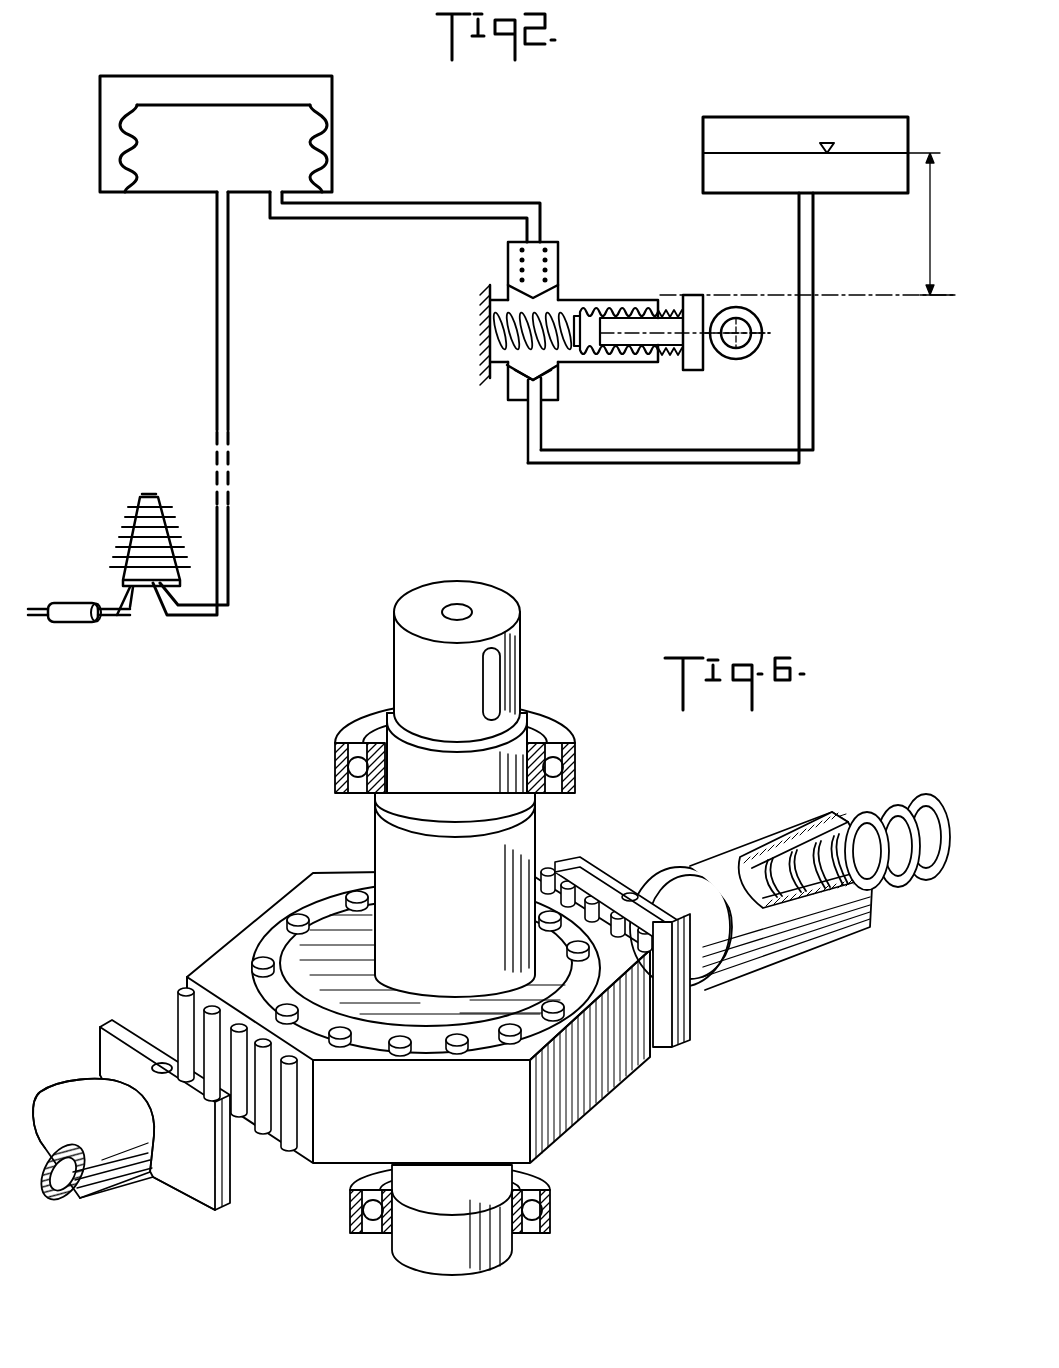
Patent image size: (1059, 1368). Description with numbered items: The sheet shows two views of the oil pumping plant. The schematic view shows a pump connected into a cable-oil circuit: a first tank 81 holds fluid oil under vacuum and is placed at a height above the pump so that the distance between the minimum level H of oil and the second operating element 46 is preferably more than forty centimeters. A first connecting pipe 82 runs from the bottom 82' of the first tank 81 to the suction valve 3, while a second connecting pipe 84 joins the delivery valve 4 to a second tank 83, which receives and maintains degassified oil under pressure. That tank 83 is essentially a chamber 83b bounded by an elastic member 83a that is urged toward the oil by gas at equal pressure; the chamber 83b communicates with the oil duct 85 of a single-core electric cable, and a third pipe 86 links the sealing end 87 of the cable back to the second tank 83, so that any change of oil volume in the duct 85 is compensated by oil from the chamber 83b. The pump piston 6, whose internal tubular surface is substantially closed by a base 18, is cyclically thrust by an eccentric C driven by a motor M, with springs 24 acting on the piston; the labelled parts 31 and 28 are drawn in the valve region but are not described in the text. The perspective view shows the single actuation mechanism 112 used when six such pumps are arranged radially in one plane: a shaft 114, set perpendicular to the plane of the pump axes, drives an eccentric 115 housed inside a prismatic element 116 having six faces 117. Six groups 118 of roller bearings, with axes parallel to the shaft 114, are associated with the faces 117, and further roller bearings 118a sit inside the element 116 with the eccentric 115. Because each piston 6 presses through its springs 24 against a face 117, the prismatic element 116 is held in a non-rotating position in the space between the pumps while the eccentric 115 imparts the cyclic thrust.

In FIG. 2, the second tank 83 is at (122, 197).
In FIG. 2, the elastic member 83a is at (318, 120).
In FIG. 2, the chamber 83b is at (262, 104).
In FIG. 2, the second connecting pipe 84 is at (465, 203).
In FIG. 2, the third pipe 86 is at (228, 410).
In FIG. 2, the sealing end 87 is at (130, 568).
In FIG. 2, the oil duct 85 is at (123, 617).
In FIG. 2, the suction valve 3 is at (512, 393).
In FIG. 2, the valve seat 31 is at (520, 372).
In FIG. 2, the delivery valve 4 is at (508, 258).
In FIG. 2, the second operating element 46 is at (540, 292).
In FIG. 2, the spring 28 is at (563, 350).
In FIG. 2, the piston 6 is at (625, 318).
In FIG. 6, the piston 6 is at (665, 885).
In FIG. 2, the springs 24 is at (676, 358).
In FIG. 6, the springs 24 is at (880, 810).
In FIG. 2, the motor M is at (737, 326).
In FIG. 2, the eccentric C is at (737, 358).
In FIG. 2, the first tank 81 is at (900, 117).
In FIG. 2, the first connecting pipe 82 is at (741, 328).
In FIG. 2, the bottom of the first tank 82' is at (873, 215).
In FIG. 2, the minimum level H is at (931, 224).
In FIG. 6, the actuation mechanism 112 is at (559, 658).
In FIG. 6, the shaft 114 is at (525, 832).
In FIG. 6, the eccentric 115 is at (345, 918).
In FIG. 6, the prismatic element 116 is at (598, 990).
In FIG. 6, the faces 117 is at (590, 1100).
In FIG. 6, the groups of roller bearings 118 is at (597, 897).
In FIG. 6, the further roller bearings 118a is at (295, 912).
In FIG. 6, the base 18 is at (690, 1038).